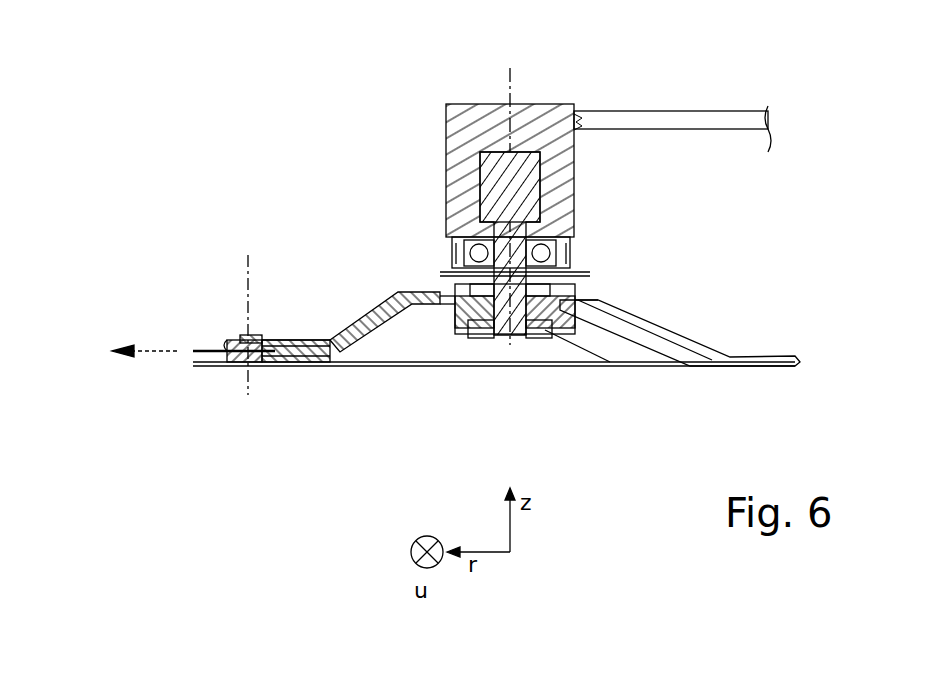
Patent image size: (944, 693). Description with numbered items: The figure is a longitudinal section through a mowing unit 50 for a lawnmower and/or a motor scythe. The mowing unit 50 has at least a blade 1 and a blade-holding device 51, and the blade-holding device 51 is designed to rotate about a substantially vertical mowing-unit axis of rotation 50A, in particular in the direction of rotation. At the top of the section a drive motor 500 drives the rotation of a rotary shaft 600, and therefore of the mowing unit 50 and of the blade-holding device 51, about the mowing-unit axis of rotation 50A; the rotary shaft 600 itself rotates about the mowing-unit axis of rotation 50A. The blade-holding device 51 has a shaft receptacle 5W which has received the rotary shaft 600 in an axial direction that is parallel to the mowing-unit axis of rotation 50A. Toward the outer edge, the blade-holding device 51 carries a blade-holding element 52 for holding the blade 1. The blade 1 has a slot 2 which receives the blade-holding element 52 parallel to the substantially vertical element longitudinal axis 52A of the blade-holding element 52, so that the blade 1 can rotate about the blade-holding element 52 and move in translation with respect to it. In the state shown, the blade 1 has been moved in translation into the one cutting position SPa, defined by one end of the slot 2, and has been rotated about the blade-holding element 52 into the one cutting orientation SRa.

The mowing unit 50 is at (235, 114).
The mowing-unit axis of rotation 50A is at (512, 68).
The drive motor 500 is at (565, 155).
The rotary shaft 600 is at (522, 280).
The shaft receptacle 5W is at (512, 290).
The blade-holding device 51 is at (270, 366).
The blade-holding element 52 is at (246, 364).
The element longitudinal axis 52A is at (250, 268).
The slot 2 is at (255, 340).
The blade 1 is at (205, 356).
The cutting orientation SRa is at (152, 351).
The cutting position SPa is at (288, 342).